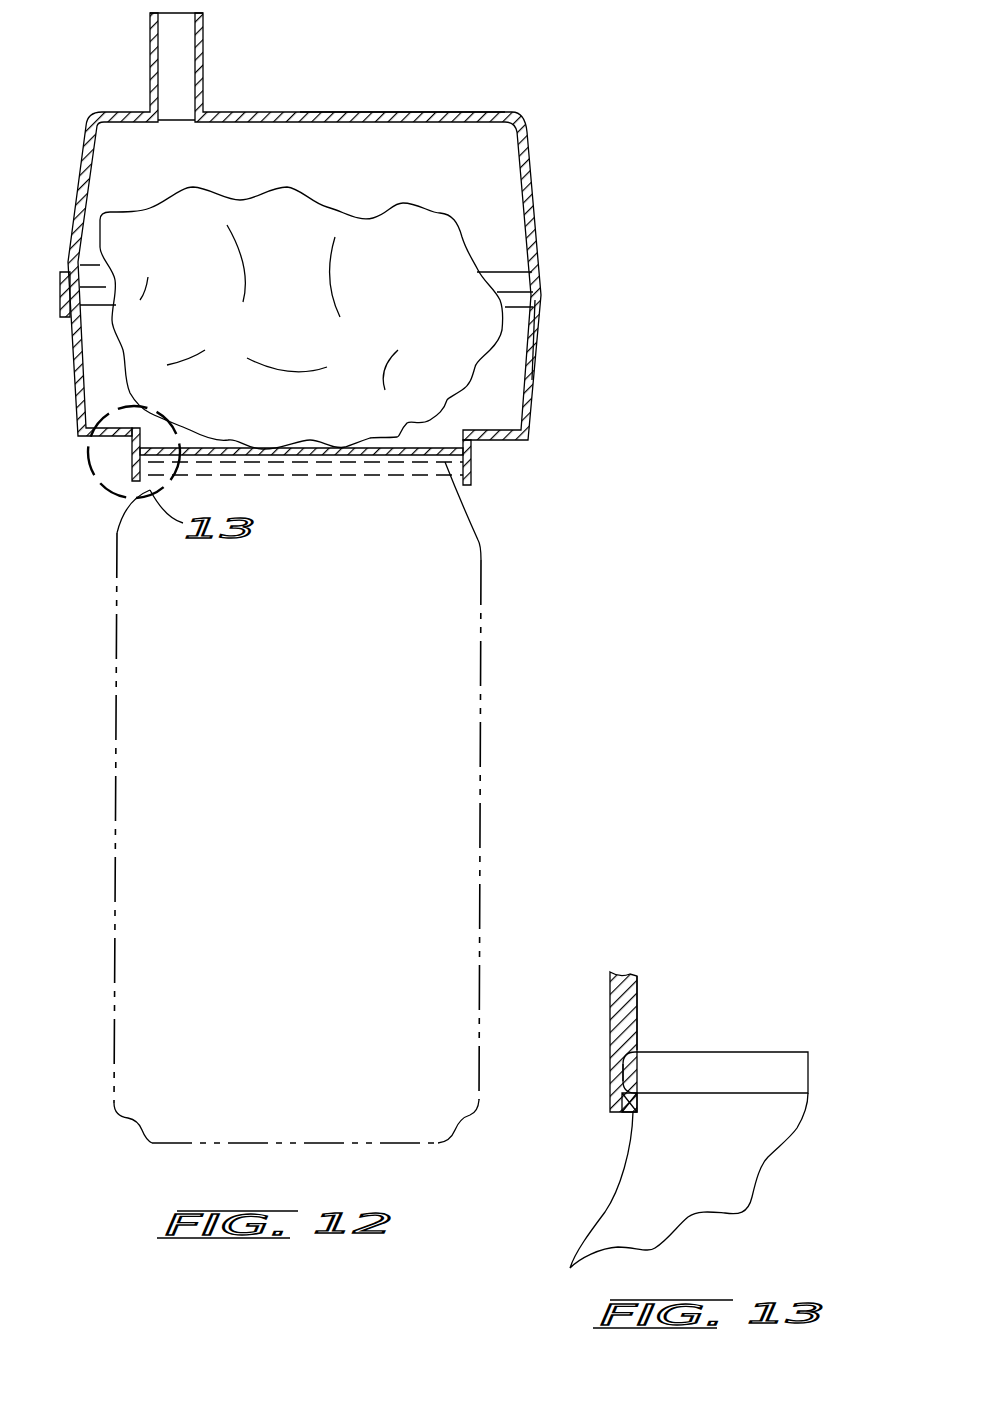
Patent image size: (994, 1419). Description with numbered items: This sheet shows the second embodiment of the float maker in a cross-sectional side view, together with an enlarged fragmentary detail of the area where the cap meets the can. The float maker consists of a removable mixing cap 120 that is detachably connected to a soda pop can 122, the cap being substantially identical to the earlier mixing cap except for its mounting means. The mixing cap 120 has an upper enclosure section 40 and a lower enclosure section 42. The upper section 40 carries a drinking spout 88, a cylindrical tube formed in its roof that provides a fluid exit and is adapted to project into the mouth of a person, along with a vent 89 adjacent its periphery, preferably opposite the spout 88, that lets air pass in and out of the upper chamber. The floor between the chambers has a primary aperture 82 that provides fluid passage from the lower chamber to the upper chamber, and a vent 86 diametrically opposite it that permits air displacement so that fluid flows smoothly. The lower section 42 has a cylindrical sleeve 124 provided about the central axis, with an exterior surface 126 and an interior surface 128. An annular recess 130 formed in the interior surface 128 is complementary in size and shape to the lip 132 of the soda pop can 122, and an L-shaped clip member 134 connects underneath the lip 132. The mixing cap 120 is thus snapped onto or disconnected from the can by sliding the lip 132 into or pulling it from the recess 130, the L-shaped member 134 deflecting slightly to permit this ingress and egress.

In FIG. 12, the upper enclosure section 40 is at (537, 213).
In FIG. 12, the lower enclosure section 42 is at (539, 350).
In FIG. 12, the primary aperture 82 is at (130, 505).
In FIG. 12, the vent 86 is at (480, 540).
In FIG. 12, the drinking spout 88 is at (206, 75).
In FIG. 12, the vent 89 is at (458, 117).
In FIG. 12, the mixing cap 120 is at (580, 225).
In FIG. 13, the soda pop can 122 is at (608, 1188).
In FIG. 12, the cylindrical sleeve 124 is at (117, 452).
In FIG. 13, the cylindrical sleeve 124 is at (605, 950).
In FIG. 12, the exterior surface 126 is at (474, 452).
In FIG. 13, the exterior surface 126 is at (610, 1025).
In FIG. 12, the interior surface 128 is at (455, 428).
In FIG. 13, the interior surface 128 is at (637, 1007).
In FIG. 12, the annular recess 130 is at (473, 482).
In FIG. 13, the annular recess 130 is at (625, 1065).
In FIG. 13, the lip 132 is at (773, 1063).
In FIG. 13, the L-shaped clip member 134 is at (635, 1110).